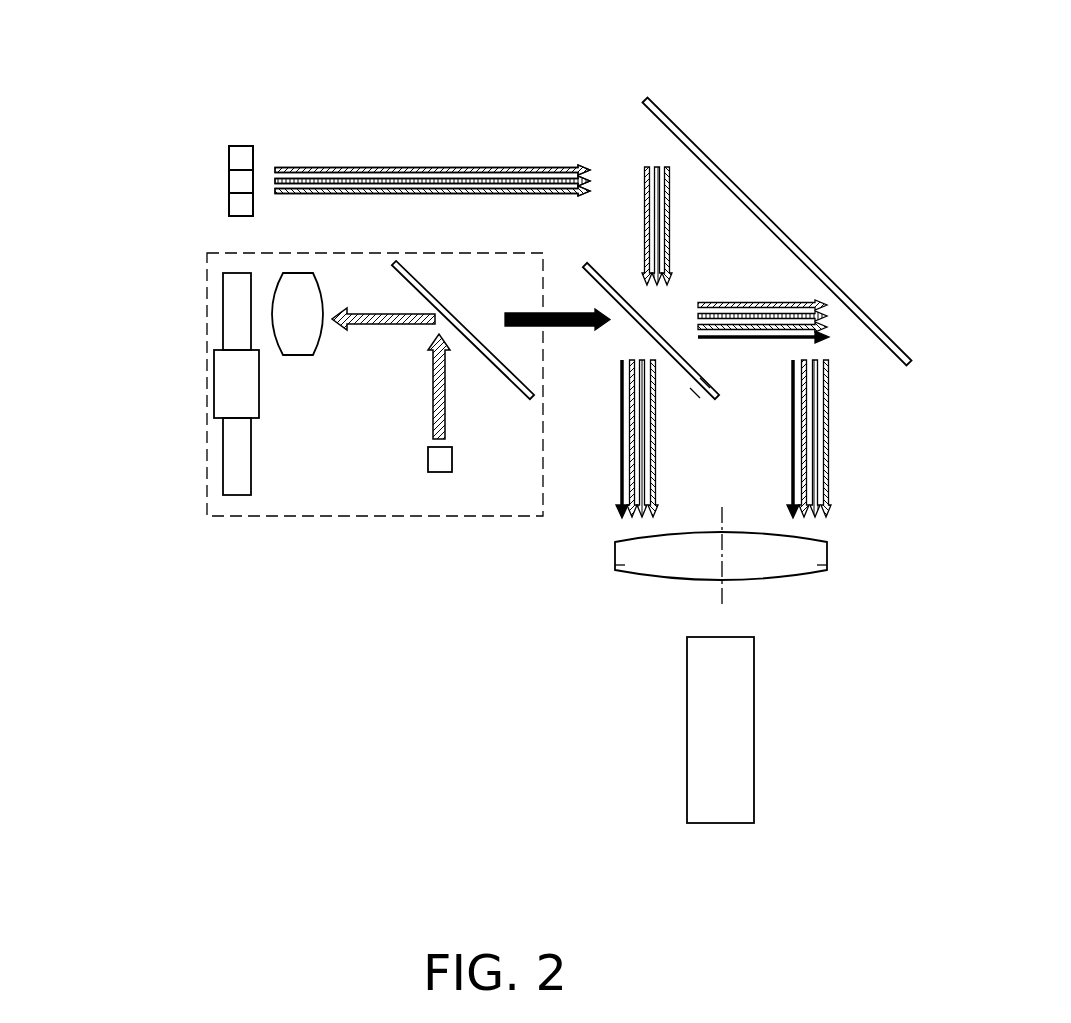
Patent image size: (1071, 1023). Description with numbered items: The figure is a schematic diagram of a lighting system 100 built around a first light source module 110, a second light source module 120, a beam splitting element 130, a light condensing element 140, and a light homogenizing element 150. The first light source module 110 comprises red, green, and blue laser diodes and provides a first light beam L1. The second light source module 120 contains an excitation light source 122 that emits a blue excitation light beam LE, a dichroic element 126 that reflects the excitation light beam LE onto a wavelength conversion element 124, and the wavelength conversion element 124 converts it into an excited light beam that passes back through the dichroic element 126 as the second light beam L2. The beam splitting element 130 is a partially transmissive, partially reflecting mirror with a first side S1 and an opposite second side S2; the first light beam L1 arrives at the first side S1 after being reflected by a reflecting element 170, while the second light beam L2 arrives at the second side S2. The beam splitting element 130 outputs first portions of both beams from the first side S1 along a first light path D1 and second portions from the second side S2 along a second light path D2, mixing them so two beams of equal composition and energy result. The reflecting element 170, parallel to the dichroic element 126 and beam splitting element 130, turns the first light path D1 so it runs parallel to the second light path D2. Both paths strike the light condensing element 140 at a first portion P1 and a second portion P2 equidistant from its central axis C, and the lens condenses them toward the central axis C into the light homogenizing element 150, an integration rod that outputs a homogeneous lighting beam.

The lighting system 100 is at (212, 834).
The first light source module 110 is at (90, 130).
The first light beam L1 is at (537, 48).
The second light source module 120 is at (207, 508).
The excitation light source 122 is at (435, 472).
The wavelength conversion element 124 is at (223, 305).
The dichroic element 126 is at (432, 292).
The excitation light beam LE is at (446, 403).
The second light beam L2 is at (593, 328).
The beam splitting element 130 is at (605, 273).
The first side S1 is at (704, 382).
The second side S2 is at (702, 388).
The reflecting element 170 is at (778, 228).
The first light path D1 is at (824, 432).
The second light path D2 is at (618, 505).
The light condensing element 140 is at (828, 552).
The central axis C is at (721, 538).
The first portion P1 is at (818, 563).
The second portion P2 is at (622, 563).
The light homogenizing element 150 is at (757, 710).